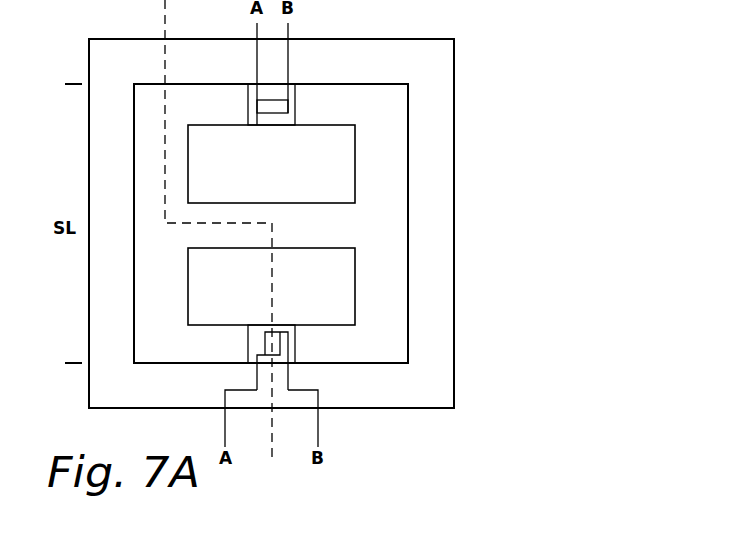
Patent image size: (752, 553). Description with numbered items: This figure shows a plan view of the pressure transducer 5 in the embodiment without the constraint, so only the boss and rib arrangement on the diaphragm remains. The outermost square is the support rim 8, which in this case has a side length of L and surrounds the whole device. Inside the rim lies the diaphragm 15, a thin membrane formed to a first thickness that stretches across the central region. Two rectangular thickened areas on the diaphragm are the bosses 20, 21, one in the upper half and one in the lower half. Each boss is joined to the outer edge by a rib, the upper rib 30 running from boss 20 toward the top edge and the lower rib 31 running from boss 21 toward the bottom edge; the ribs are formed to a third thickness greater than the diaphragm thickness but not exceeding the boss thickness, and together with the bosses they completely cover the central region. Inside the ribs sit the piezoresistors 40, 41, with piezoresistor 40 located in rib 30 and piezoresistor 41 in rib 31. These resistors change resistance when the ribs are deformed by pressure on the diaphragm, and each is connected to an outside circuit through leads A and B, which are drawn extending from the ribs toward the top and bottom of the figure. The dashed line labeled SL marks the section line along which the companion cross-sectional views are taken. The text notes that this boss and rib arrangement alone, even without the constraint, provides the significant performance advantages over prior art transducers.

The pressure transducer 5 is at (556, 64).
The support rim 8 is at (443, 247).
The diaphragm 15 is at (372, 140).
The boss 20 is at (355, 175).
The boss 21 is at (355, 290).
The rib 30 is at (295, 115).
The rib 31 is at (295, 335).
The piezoresistor 40 is at (257, 104).
The piezoresistor 41 is at (250, 340).